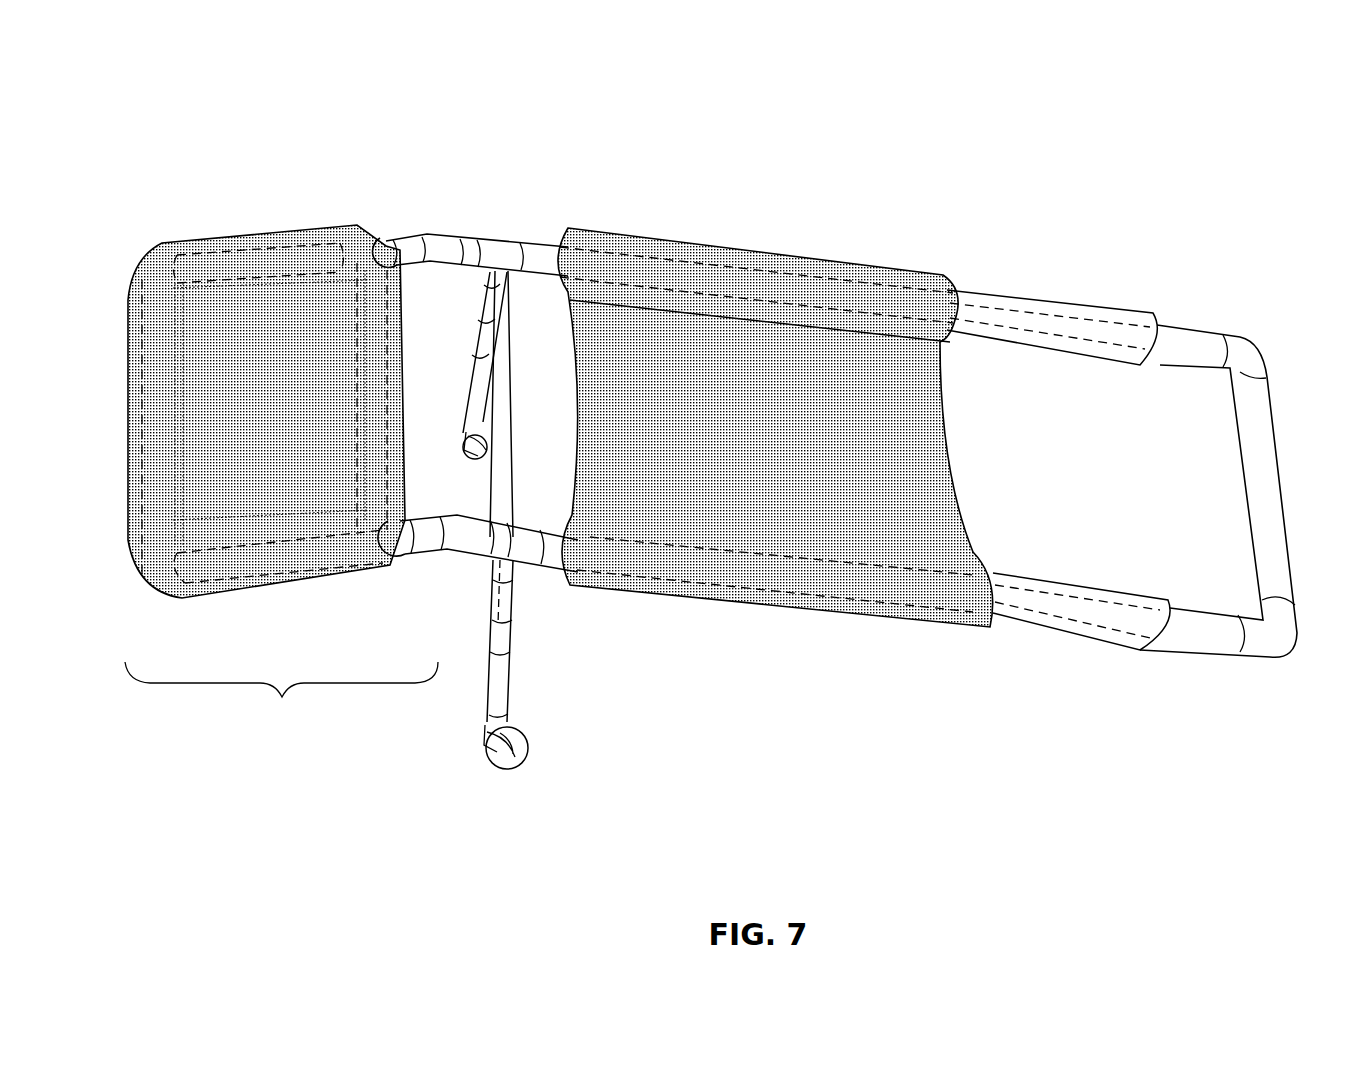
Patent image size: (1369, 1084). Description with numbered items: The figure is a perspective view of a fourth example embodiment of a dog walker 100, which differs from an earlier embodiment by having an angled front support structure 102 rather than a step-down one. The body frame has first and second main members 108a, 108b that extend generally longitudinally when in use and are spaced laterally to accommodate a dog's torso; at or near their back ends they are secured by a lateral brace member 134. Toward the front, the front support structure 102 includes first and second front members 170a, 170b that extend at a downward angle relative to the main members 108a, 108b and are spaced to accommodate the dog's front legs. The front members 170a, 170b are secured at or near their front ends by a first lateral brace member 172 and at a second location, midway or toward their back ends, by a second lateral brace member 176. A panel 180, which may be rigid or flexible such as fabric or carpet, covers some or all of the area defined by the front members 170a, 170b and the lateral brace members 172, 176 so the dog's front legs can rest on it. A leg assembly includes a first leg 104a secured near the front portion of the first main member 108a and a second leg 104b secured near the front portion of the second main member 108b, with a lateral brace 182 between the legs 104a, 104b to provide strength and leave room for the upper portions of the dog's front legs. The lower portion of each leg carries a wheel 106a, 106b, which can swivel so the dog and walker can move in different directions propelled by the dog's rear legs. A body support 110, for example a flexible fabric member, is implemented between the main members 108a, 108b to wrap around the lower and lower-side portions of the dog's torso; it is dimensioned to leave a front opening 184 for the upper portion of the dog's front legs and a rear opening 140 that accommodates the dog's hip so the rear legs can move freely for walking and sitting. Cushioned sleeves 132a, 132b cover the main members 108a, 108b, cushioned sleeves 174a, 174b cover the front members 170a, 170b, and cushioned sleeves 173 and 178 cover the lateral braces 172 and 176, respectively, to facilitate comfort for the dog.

The walker 100 is at (574, 96).
The front support structure 102 is at (281, 480).
The first leg 104a is at (520, 680).
The second leg 104b is at (470, 383).
The wheel 106a is at (545, 748).
The wheel 106b is at (458, 458).
The first main member 108a is at (1057, 628).
The second main member 108b is at (1002, 305).
The body support 110 is at (780, 490).
The cushioned sleeve 132a is at (1110, 648).
The cushioned sleeve 132b is at (1087, 300).
The lateral brace member 134 is at (1280, 497).
The rear opening 140 is at (1020, 470).
The first front member 170a is at (290, 575).
The second front member 170b is at (277, 247).
The first lateral brace member 172 is at (142, 418).
The cushioned sleeve 173 is at (185, 408).
The cushioned sleeve 174a is at (258, 587).
The cushioned sleeve 174b is at (248, 237).
The second lateral brace member 176 is at (357, 405).
The cushioned sleeve 178 is at (348, 388).
The panel 180 is at (248, 380).
The lateral brace 182 is at (507, 390).
The front opening 184 is at (452, 294).